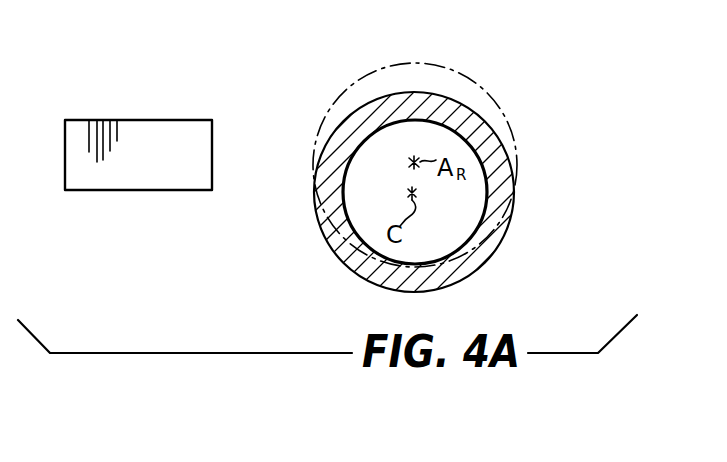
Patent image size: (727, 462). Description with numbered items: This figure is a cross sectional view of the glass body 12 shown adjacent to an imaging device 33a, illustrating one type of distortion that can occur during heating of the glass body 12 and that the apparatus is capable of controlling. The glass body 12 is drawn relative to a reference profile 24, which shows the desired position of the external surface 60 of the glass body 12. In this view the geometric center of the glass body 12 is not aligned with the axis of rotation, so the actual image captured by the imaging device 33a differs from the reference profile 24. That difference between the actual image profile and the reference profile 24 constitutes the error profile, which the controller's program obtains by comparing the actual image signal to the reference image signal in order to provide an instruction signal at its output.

The imaging device 33a is at (195, 119).
The reference profile 24 is at (487, 82).
The glass body 12 is at (498, 240).
The external surface 60 is at (487, 258).